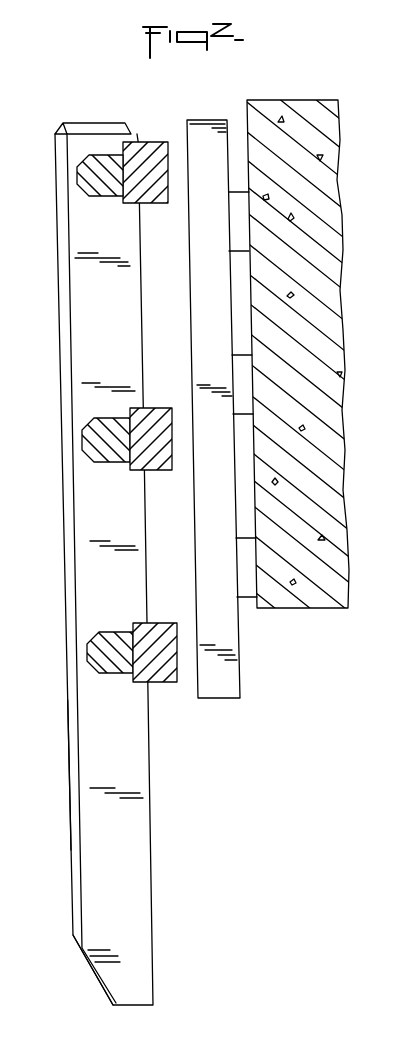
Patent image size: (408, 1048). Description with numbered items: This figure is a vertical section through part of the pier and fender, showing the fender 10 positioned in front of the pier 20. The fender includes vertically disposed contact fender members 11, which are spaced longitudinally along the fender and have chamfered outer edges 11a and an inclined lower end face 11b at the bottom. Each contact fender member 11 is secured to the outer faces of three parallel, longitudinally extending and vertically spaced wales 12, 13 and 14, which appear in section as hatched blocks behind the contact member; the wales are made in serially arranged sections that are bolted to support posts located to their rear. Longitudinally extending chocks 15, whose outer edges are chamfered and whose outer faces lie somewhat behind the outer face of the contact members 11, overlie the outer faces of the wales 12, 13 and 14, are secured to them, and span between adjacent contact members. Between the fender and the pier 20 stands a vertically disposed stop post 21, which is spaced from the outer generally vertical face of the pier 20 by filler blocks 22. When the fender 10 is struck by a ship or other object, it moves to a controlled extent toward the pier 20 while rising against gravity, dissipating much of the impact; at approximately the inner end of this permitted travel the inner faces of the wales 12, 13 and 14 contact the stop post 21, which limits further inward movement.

The fender 10 is at (60, 292).
The contact fender member 11 is at (128, 881).
The chamfered outer edge 11a is at (75, 812).
The inclined lower end face 11b is at (92, 972).
The wale 12 is at (167, 200).
The wale 13 is at (158, 463).
The wale 14 is at (171, 676).
The chock 15 is at (97, 172).
The pier 20 is at (312, 100).
The stop post 21 is at (226, 690).
The filler block 22 is at (232, 206).